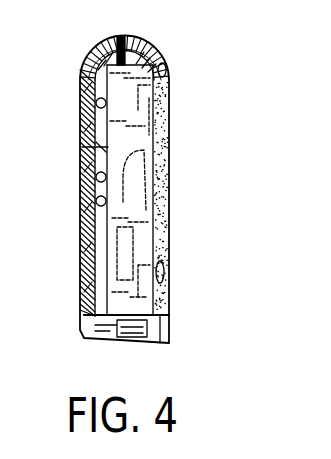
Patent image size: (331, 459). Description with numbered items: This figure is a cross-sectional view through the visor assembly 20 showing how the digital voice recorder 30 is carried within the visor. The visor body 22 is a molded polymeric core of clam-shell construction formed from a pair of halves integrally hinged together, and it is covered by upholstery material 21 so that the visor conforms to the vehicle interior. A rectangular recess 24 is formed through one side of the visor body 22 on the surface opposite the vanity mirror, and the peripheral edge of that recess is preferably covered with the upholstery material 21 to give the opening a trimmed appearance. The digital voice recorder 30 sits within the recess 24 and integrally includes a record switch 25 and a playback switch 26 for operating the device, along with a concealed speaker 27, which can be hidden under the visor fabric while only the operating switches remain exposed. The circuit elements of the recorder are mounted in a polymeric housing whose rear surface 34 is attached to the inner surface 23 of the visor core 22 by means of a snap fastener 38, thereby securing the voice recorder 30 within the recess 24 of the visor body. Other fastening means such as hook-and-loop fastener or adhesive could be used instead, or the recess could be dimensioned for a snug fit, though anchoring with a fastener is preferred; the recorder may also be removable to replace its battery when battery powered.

The visor assembly 20 is at (91, 44).
The upholstery material 21 is at (150, 56).
The visor body 22 is at (81, 70).
The inner surface 23 is at (86, 112).
The rectangular recess 24 is at (170, 78).
The record switch 25 is at (172, 255).
The playback switch 26 is at (173, 88).
The concealed speaker 27 is at (176, 152).
The digital voice recorder 30 is at (142, 243).
The rear surface 34 is at (90, 147).
The snap fastener 38 is at (95, 176).